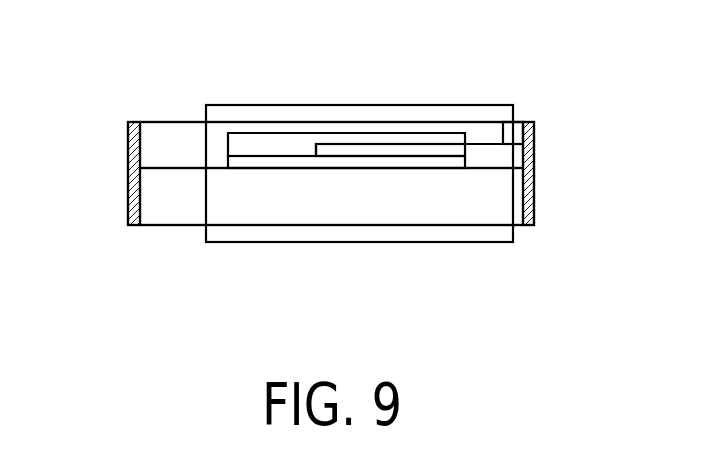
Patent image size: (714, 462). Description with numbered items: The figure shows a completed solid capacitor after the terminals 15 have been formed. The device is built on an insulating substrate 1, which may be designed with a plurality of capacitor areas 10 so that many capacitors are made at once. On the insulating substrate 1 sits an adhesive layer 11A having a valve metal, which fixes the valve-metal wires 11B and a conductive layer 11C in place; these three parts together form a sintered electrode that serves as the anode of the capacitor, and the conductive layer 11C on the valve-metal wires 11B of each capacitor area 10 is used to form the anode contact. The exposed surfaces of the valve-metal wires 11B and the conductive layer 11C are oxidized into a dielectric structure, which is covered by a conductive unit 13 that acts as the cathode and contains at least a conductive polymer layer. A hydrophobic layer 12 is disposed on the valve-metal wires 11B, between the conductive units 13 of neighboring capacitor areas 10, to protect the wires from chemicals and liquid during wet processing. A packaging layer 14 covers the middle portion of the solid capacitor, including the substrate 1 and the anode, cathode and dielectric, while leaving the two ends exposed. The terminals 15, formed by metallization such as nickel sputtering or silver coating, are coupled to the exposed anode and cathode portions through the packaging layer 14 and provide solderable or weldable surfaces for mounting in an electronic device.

The insulating substrate 1 is at (173, 232).
The capacitor area 10 is at (295, 208).
The adhesive layer 11A is at (373, 160).
The valve-metal wires 11B is at (438, 150).
The conductive layer 11C is at (272, 146).
The hydrophobic layer 12 is at (517, 133).
The conductive unit 13 is at (175, 145).
The packaging layer 14 is at (220, 105).
The terminals 15 is at (133, 148).